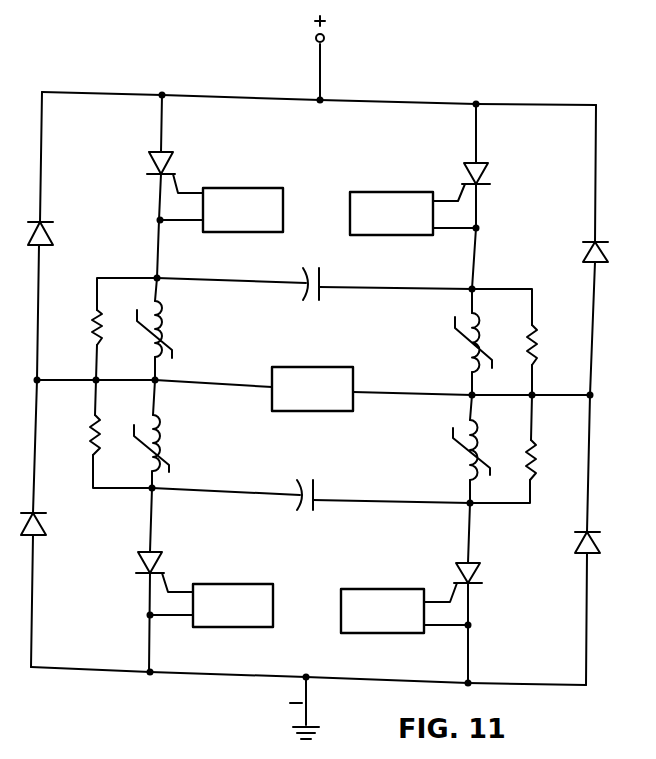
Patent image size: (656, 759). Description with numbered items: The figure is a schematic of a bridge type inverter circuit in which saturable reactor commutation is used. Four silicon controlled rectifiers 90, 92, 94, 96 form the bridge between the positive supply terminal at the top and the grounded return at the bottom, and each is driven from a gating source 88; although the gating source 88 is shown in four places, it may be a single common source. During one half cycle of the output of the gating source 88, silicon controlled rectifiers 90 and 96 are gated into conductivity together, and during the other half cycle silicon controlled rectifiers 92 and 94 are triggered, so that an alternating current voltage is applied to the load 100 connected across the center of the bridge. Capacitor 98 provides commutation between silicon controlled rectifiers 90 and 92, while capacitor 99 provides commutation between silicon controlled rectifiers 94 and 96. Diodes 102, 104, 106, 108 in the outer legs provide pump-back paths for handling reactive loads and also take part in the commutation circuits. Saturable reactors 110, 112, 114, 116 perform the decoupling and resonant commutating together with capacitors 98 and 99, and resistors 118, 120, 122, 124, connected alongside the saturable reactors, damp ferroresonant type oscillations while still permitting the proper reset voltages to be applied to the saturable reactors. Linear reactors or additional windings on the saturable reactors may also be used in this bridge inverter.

The gating source 88 is at (233, 188).
The silicon controlled rectifier 90 is at (156, 149).
The silicon controlled rectifier 92 is at (479, 163).
The silicon controlled rectifier 94 is at (162, 559).
The silicon controlled rectifier 96 is at (455, 567).
The capacitor 98 is at (320, 272).
The capacitor 99 is at (313, 492).
The load 100 is at (308, 367).
The diode 102 is at (50, 230).
The diode 104 is at (44, 526).
The diode 106 is at (585, 252).
The diode 108 is at (582, 540).
The saturable reactor 110 is at (167, 326).
The saturable reactor 112 is at (460, 355).
The saturable reactor 114 is at (164, 440).
The saturable reactor 116 is at (461, 464).
The resistor 118 is at (93, 327).
The resistor 120 is at (536, 356).
The resistor 122 is at (92, 438).
The resistor 124 is at (533, 470).